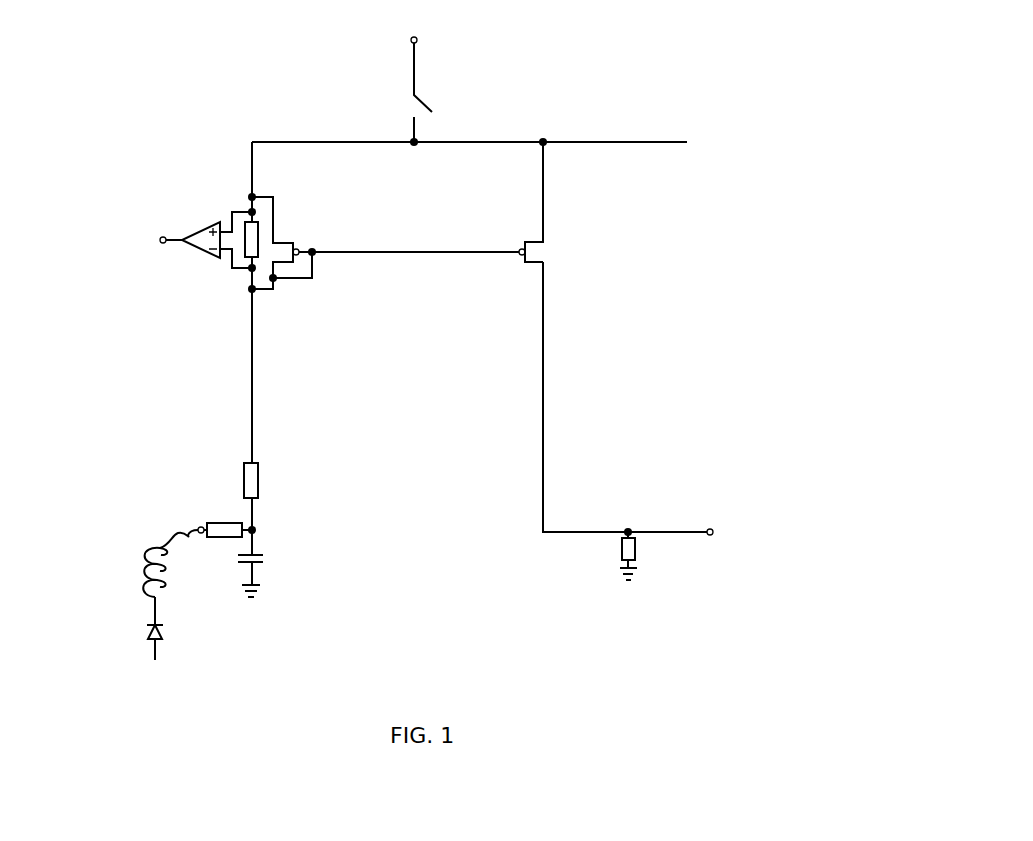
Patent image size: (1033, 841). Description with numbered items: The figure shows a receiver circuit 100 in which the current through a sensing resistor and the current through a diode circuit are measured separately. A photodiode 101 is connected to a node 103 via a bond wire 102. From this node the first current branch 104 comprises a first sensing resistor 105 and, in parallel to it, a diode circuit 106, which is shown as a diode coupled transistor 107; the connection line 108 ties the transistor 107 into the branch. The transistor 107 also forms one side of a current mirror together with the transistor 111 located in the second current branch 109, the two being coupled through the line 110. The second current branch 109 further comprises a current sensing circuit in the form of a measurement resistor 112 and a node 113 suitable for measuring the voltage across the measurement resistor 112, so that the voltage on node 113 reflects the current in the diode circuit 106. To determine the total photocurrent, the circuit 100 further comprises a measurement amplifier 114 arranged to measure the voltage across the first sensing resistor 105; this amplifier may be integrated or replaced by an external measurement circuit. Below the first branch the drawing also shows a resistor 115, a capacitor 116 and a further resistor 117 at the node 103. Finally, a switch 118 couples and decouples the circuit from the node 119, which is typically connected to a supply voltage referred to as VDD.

The receiver circuit 100 is at (215, 112).
The photodiode 101 is at (147, 630).
The bond wire 102 is at (147, 572).
The node 103 is at (198, 527).
The first current branch 104 is at (238, 359).
The first sensing resistor 105 is at (263, 240).
The diode circuit 106 is at (306, 295).
The diode coupled transistor 107 is at (299, 246).
The connection line 108 is at (315, 272).
The second current branch 109 is at (557, 342).
The control line 110 is at (506, 280).
The transistor 111 is at (528, 247).
The measurement resistor 112 is at (637, 556).
The node 113 is at (712, 529).
The measurement amplifier 114 is at (205, 226).
The resistor 115 is at (260, 483).
The capacitor 116 is at (263, 563).
The resistor 117 is at (235, 522).
The switch 118 is at (427, 104).
The node 119 is at (417, 40).